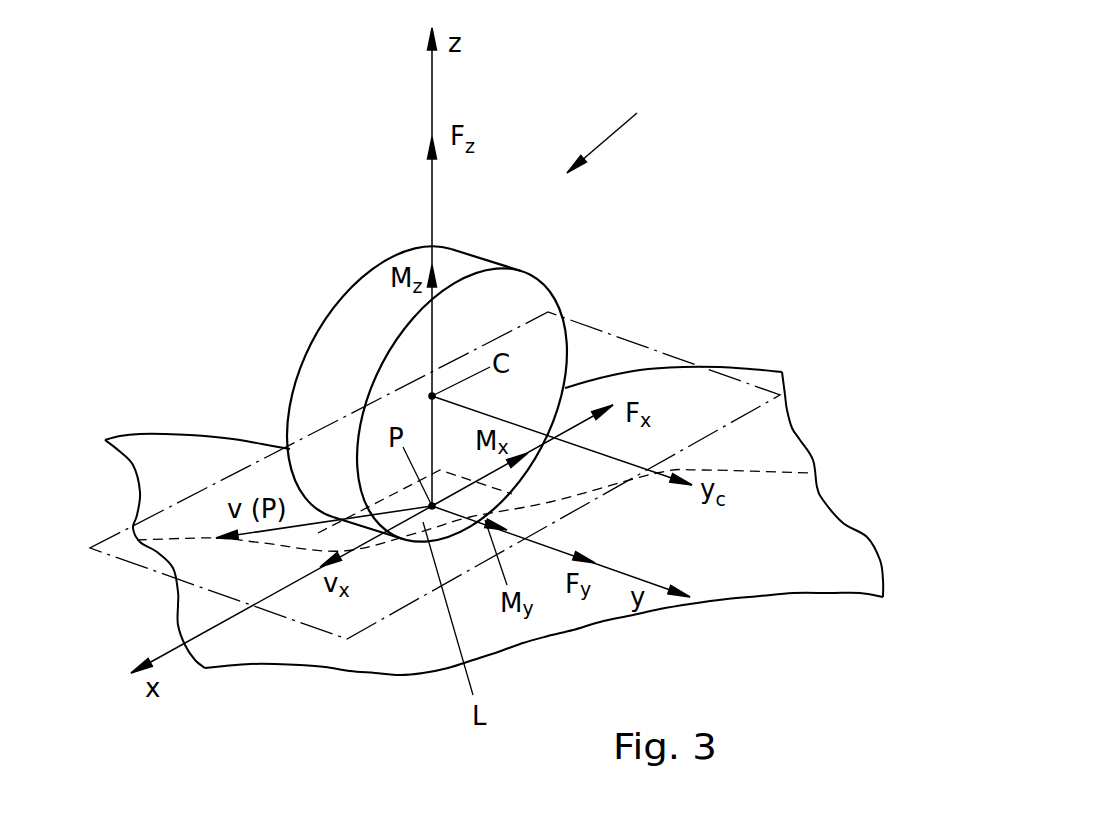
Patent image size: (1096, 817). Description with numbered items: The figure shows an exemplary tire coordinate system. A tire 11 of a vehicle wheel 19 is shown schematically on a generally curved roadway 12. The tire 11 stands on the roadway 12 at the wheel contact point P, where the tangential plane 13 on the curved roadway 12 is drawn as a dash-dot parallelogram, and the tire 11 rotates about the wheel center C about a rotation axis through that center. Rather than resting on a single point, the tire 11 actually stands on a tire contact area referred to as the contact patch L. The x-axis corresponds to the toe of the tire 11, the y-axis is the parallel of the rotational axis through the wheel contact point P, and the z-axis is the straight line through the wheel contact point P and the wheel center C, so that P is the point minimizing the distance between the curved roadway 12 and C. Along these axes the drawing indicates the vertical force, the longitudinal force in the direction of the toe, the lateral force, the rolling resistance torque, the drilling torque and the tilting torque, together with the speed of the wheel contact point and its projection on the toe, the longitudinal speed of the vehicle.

The tire 11 is at (503, 298).
The roadway 12 is at (763, 550).
The tangential plane 13 is at (613, 332).
The vehicle wheel 19 is at (623, 125).